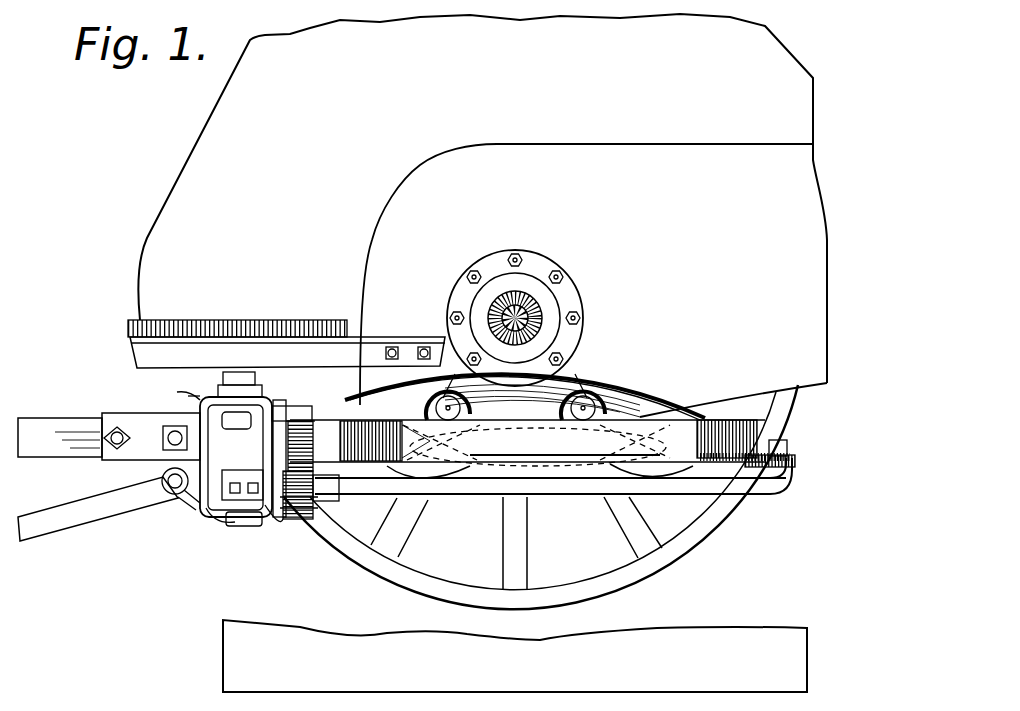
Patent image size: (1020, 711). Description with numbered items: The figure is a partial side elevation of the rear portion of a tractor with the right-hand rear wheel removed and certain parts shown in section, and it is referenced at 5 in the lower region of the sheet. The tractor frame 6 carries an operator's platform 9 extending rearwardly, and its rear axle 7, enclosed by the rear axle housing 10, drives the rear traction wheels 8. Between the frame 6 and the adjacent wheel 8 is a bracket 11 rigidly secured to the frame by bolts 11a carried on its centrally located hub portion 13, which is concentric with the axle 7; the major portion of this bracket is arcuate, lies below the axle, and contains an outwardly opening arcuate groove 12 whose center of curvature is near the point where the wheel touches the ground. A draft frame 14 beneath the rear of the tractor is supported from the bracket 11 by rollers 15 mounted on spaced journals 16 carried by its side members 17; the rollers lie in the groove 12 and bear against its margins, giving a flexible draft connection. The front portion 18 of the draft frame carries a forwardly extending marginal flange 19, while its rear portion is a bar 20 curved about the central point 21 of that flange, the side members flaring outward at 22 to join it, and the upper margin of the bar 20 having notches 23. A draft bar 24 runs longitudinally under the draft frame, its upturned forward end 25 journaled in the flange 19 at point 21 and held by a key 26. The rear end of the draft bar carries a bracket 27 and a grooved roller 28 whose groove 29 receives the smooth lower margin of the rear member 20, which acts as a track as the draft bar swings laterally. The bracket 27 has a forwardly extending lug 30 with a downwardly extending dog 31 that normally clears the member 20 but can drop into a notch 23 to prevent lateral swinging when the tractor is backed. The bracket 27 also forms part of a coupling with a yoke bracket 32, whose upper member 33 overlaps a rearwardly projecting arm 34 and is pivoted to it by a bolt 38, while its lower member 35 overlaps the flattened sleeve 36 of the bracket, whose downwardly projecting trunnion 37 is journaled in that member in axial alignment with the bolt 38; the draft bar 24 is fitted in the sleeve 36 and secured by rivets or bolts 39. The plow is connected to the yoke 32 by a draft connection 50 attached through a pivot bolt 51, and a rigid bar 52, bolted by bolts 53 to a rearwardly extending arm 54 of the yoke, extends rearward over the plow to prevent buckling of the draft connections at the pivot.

The vehicle frame 5 is at (543, 710).
The frame 6 is at (523, 150).
The rear axle 7 is at (537, 302).
The rear traction wheels 8 is at (690, 549).
The operator's platform 9 is at (280, 405).
The rear axle housing 10 is at (543, 308).
The bracket 11 is at (592, 368).
The bolts 11a is at (453, 312).
The arcuate groove or channel 12 is at (560, 376).
The hub portion 13 is at (475, 258).
The draft frame 14 is at (737, 418).
The rollers 15 is at (438, 396).
The journals 16 is at (605, 398).
The side members 17 is at (493, 467).
The V-shaped front portion 18 is at (759, 442).
The marginal flange 19 is at (745, 492).
The rear member (bar) 20 is at (372, 468).
The central point 21 is at (795, 460).
The flared rear end portions 22 is at (390, 462).
The notches 23 is at (297, 415).
The draft bar 24 is at (590, 497).
The upturned forward end 25 is at (778, 480).
The key 26 is at (790, 447).
The bracket 27 is at (273, 400).
The grooved roller 28 is at (283, 515).
The groove 29 is at (300, 513).
The lug 30 is at (295, 413).
The dog 31 is at (305, 420).
The yoke bracket 32 is at (197, 508).
The upper yoke member 33 is at (205, 402).
The rearwardly projecting arm 34 is at (200, 403).
The lower yoke member 35 is at (220, 523).
The sleeve 36 is at (287, 517).
The trunnion 37 is at (237, 530).
The bolt 38 is at (233, 370).
The rivets or bolts 39 is at (235, 488).
The draft connection 50 is at (38, 537).
The pivot bolt 51 is at (180, 492).
The rigid bar 52 is at (43, 460).
The bolts 53 is at (110, 455).
The rearwardly extending arm 54 is at (180, 407).